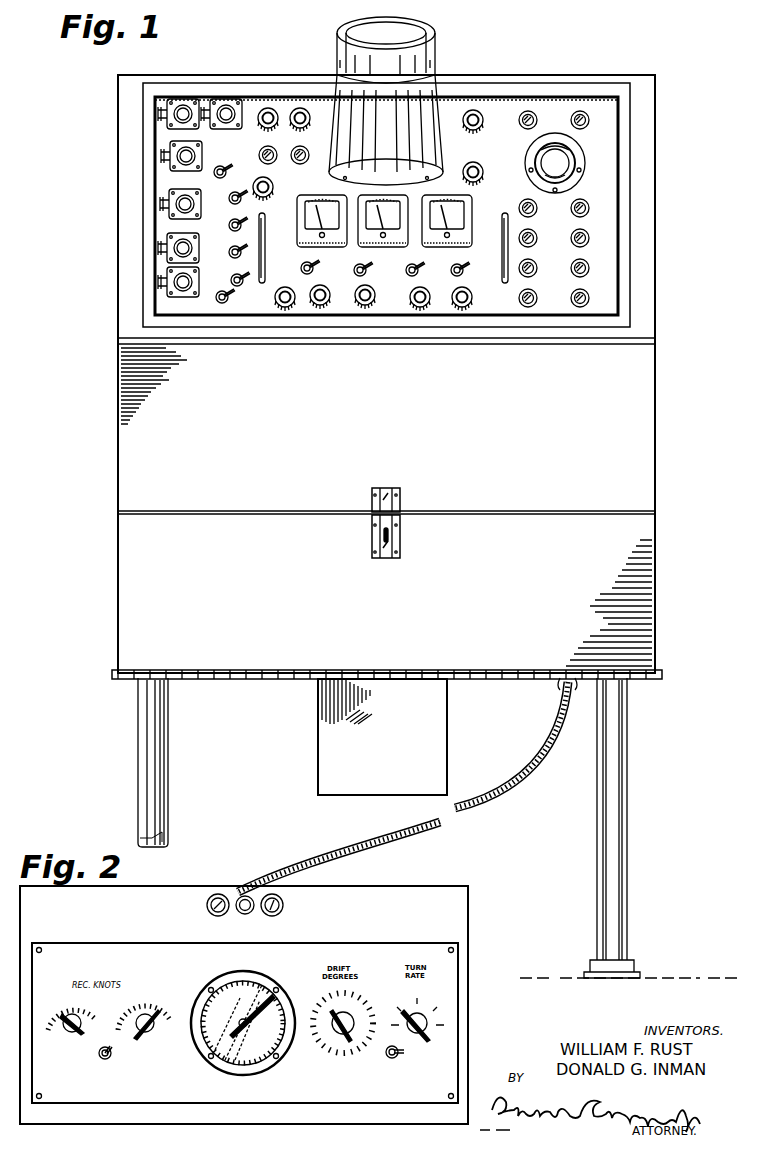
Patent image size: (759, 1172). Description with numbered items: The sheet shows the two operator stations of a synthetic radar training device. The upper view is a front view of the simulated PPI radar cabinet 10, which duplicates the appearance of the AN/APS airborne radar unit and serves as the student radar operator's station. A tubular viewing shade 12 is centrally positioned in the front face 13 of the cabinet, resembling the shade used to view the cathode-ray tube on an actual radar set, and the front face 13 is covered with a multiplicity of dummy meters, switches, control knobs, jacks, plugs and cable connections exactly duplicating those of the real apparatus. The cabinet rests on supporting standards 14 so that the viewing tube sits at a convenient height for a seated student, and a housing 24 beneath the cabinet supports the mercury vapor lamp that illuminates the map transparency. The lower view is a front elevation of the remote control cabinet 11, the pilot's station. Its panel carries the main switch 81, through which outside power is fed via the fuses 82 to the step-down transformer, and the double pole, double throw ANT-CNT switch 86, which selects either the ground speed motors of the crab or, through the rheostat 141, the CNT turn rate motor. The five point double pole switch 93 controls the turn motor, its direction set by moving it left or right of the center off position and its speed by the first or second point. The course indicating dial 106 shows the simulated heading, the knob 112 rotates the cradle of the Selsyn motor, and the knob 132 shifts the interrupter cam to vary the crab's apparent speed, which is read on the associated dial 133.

In FIG. 1, the simulated PPI radar cabinet 10 is at (118, 395).
In FIG. 2, the remote control cabinet 11 is at (468, 917).
In FIG. 1, the tubular viewing shade 12 is at (434, 45).
In FIG. 1, the front face 13 is at (612, 186).
In FIG. 1, the supporting standards 14 is at (628, 770).
In FIG. 1, the housing 24 is at (322, 748).
In FIG. 2, the main switch 81 is at (397, 1058).
In FIG. 2, the fuses 82 is at (263, 915).
In FIG. 2, the double pole, double throw switch 86 is at (112, 1060).
In FIG. 2, the five point double pole switch 93 is at (432, 1035).
In FIG. 2, the course indicating dial 106 is at (236, 974).
In FIG. 2, the knob 112 is at (350, 1050).
In FIG. 2, the knob 132 is at (136, 1040).
In FIG. 2, the dial 133 is at (140, 972).
In FIG. 2, the rheostat 141 is at (60, 1002).